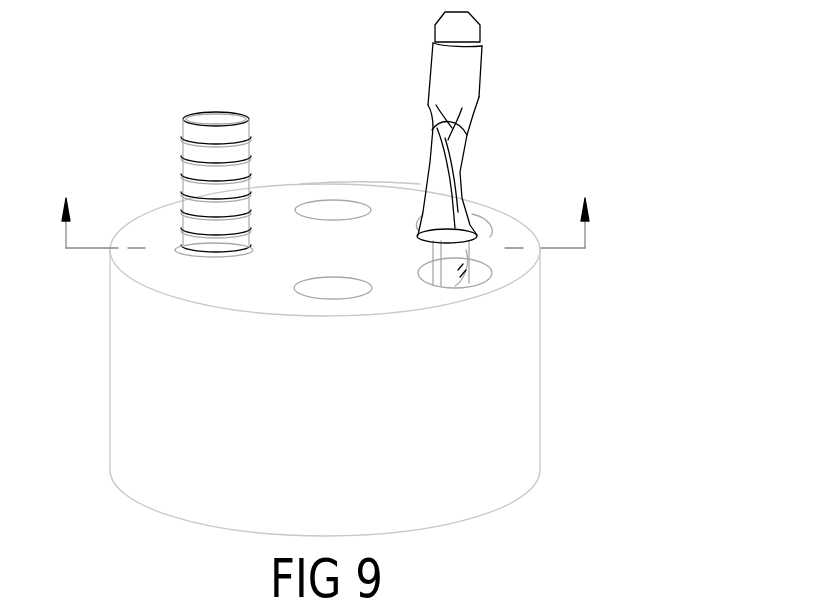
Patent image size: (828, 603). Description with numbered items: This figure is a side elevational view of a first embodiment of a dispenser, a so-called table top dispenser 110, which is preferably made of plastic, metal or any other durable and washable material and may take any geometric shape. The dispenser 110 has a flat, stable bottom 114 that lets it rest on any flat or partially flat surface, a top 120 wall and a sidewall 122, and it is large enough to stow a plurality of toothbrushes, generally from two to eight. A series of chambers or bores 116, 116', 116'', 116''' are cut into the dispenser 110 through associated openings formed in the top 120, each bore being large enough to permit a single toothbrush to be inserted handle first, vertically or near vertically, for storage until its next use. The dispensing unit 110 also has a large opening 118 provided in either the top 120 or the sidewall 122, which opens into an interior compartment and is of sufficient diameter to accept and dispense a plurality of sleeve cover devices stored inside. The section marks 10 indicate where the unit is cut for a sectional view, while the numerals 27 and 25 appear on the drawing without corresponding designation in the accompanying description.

The table top dispenser 110 is at (642, 244).
The bottom 114 is at (490, 512).
The bore 116 is at (505, 271).
The bore 116' is at (476, 200).
The bore 116'' is at (356, 181).
The bore 116''' is at (213, 306).
The large opening 118 is at (175, 250).
The top wall 120 is at (295, 185).
The sidewall 122 is at (525, 398).
The drill bit 27 is at (483, 264).
The section line 10- 10 is at (329, 197).
The sheet reference 25 is at (532, 596).